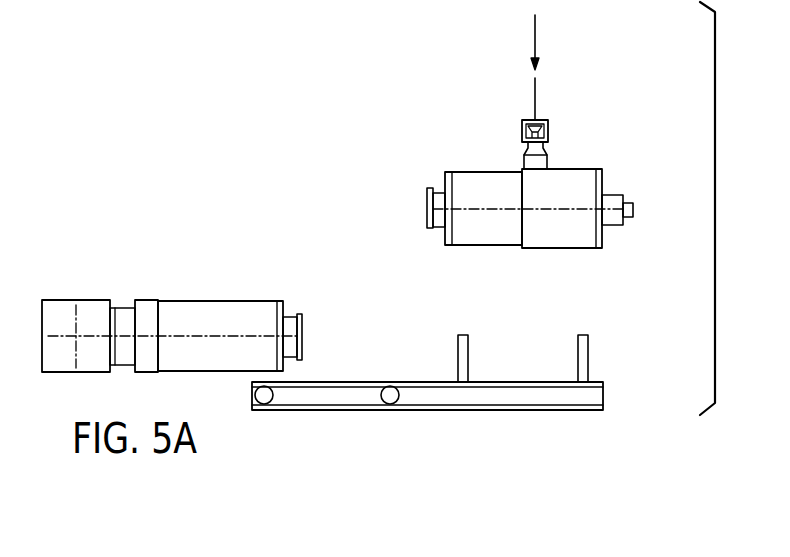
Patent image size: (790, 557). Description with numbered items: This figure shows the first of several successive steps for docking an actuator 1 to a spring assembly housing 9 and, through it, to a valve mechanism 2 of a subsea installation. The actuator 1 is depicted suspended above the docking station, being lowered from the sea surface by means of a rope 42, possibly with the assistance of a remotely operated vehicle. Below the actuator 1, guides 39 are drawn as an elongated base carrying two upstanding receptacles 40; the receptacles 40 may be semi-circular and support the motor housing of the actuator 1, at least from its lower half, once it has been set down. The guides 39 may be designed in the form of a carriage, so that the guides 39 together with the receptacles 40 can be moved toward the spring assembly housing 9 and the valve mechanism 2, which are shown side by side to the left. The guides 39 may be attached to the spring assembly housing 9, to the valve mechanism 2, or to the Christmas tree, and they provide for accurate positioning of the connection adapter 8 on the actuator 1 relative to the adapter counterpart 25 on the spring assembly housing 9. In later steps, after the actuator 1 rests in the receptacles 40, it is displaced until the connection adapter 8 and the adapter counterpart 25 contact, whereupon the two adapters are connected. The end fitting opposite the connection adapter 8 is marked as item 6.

The actuator 1 is at (529, 131).
The valve mechanism 2 is at (62, 300).
The outlet fitting 6 is at (617, 193).
The connection adapter 8 is at (438, 190).
The spring assembly housing 9 is at (196, 296).
The adapter counterpart 25 is at (290, 317).
The guides 39 is at (478, 398).
The receptacles 40 is at (578, 360).
The rope 42 is at (535, 100).